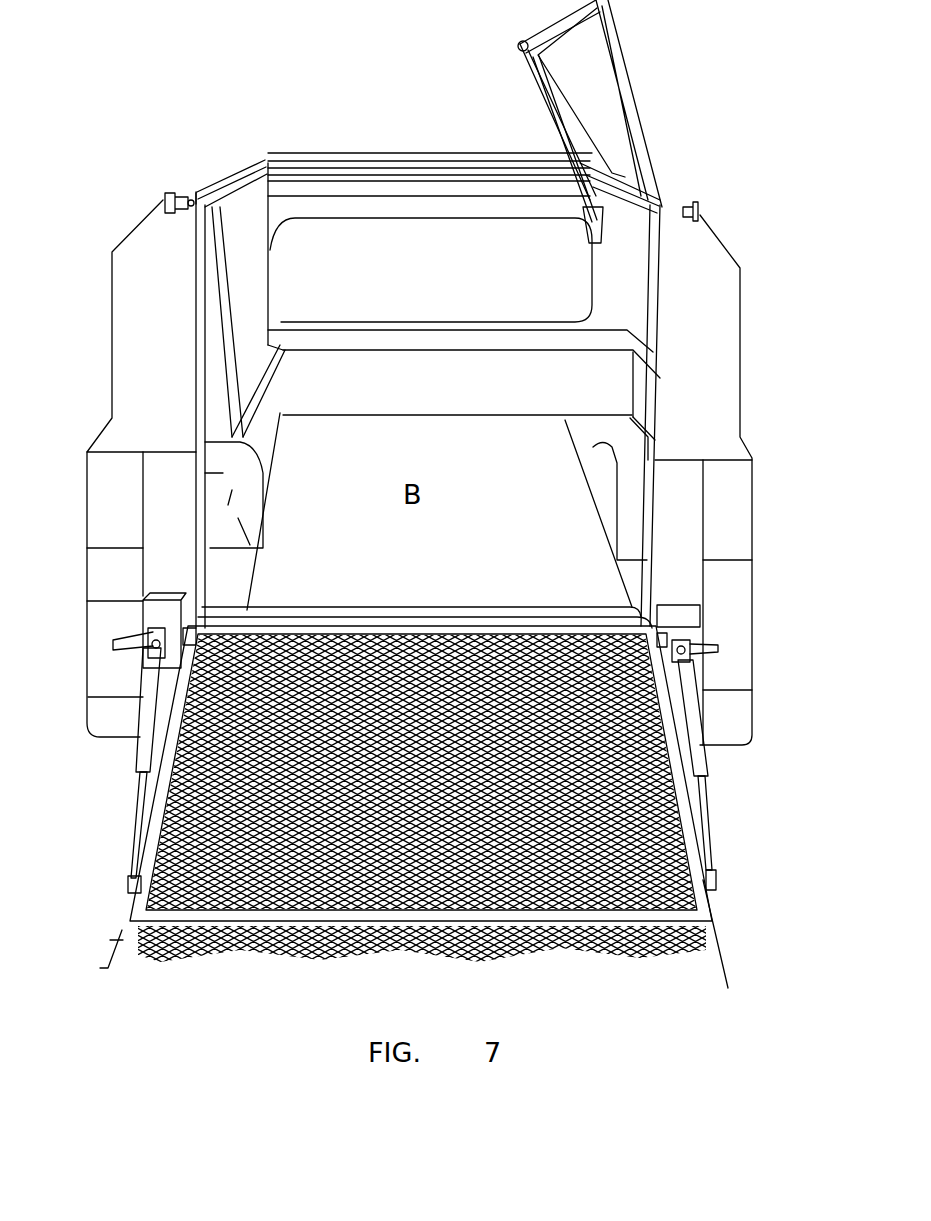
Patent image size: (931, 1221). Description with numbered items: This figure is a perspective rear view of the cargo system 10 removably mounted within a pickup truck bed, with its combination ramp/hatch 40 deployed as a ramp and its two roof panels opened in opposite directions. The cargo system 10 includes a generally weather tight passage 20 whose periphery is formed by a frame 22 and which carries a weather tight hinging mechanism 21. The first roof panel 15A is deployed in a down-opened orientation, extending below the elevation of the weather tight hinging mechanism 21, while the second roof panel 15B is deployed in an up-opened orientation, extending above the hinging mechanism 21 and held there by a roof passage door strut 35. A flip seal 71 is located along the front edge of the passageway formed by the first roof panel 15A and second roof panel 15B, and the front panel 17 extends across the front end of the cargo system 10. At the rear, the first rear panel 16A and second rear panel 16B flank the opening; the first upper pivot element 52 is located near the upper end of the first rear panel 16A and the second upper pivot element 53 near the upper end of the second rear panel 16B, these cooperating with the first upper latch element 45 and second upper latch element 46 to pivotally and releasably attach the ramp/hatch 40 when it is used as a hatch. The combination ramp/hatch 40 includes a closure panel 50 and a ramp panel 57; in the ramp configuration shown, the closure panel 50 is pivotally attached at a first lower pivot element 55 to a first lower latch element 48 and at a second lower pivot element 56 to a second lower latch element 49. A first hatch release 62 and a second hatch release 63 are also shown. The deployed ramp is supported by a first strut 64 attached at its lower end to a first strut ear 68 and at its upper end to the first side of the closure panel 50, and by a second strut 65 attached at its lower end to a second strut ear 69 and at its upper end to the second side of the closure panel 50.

The cargo system 10 is at (365, 98).
The first roof panel 15A is at (268, 300).
The second roof panel 15B is at (622, 46).
The first rear panel 16A is at (150, 500).
The second rear panel 16B is at (690, 505).
The front panel 17 is at (458, 218).
The weather tight passage 20 is at (678, 146).
The weather tight hinging mechanism 21 is at (211, 174).
The frame 22 is at (268, 158).
The roof passage door strut 35 is at (540, 103).
The combination ramp/hatch 40 is at (724, 796).
The first upper latch element 45 is at (120, 921).
The second upper latch element 46 is at (712, 880).
The first lower latch element 48 is at (162, 596).
The second lower latch element 49 is at (700, 615).
The closure panel 50 is at (132, 884).
The first upper pivot element 52 is at (165, 200).
The second upper pivot element 53 is at (699, 212).
The first lower pivot element 55 is at (194, 633).
The second lower pivot element 56 is at (646, 636).
The ramp panel 57 is at (718, 915).
The first hatch release 62 is at (128, 642).
The second hatch release 63 is at (718, 641).
The first strut 64 is at (140, 768).
The second strut 65 is at (692, 725).
The first strut ear 68 is at (147, 660).
The second strut ear 69 is at (720, 654).
The flip seal 71 is at (415, 158).